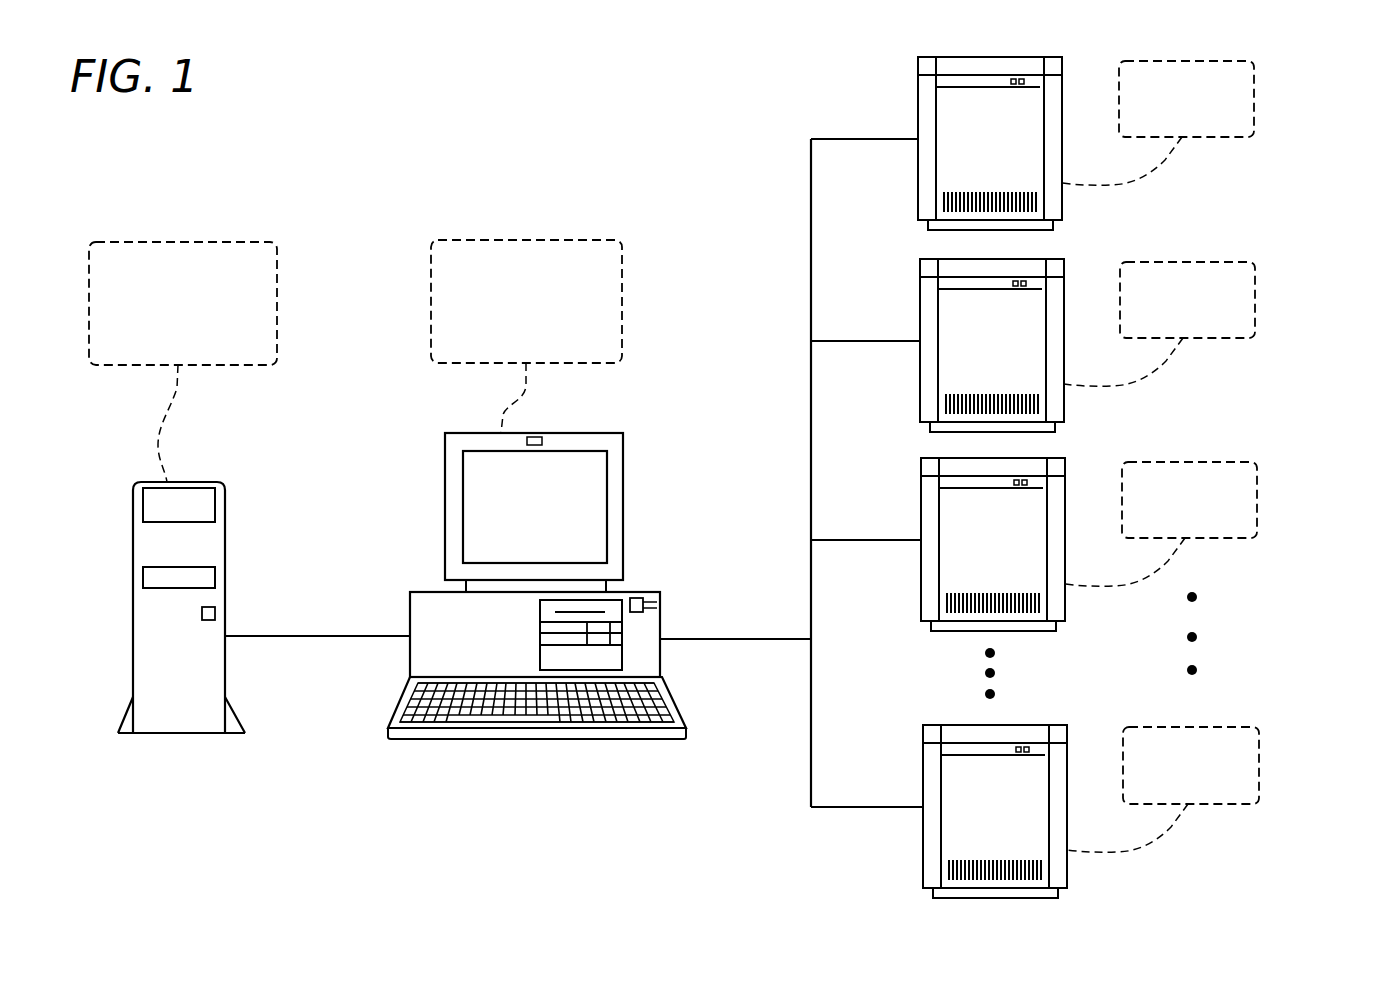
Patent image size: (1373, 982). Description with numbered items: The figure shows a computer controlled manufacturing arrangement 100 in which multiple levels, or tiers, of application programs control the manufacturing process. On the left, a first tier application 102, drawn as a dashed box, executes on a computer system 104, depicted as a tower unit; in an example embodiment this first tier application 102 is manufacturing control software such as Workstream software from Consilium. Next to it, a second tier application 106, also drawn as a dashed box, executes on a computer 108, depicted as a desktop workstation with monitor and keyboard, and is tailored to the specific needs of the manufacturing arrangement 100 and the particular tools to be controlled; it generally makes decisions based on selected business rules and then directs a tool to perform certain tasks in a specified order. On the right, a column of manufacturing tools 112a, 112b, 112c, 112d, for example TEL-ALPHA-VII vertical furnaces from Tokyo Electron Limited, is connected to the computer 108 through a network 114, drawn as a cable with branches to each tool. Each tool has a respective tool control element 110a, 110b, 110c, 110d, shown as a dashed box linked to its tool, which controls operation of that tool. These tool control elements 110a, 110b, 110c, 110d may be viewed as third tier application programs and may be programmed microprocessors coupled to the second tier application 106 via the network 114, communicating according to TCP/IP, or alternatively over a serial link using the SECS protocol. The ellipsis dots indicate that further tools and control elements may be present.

The computer controlled manufacturing arrangement 100 is at (470, 196).
The first tier application 102 is at (277, 303).
The computer system 104 is at (225, 550).
The second tier application 106 is at (622, 300).
The computer 108 is at (623, 520).
The tool control element 110a is at (1254, 90).
The tool control element 110b is at (1255, 291).
The tool control element 110c is at (1257, 491).
The tool control element 110d is at (1259, 757).
The manufacturing tool 112a is at (1037, 42).
The manufacturing tool 112b is at (1060, 258).
The manufacturing tool 112c is at (1061, 457).
The manufacturing tool 112d is at (1063, 724).
The network 114 is at (735, 636).